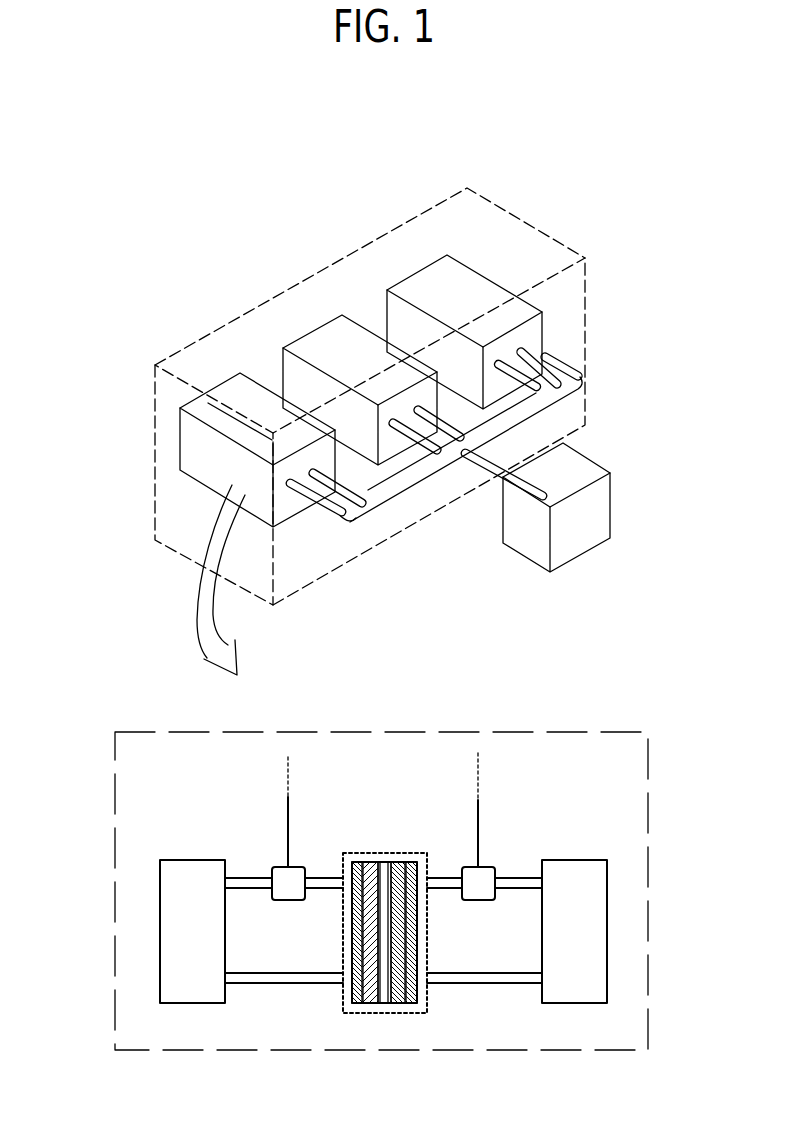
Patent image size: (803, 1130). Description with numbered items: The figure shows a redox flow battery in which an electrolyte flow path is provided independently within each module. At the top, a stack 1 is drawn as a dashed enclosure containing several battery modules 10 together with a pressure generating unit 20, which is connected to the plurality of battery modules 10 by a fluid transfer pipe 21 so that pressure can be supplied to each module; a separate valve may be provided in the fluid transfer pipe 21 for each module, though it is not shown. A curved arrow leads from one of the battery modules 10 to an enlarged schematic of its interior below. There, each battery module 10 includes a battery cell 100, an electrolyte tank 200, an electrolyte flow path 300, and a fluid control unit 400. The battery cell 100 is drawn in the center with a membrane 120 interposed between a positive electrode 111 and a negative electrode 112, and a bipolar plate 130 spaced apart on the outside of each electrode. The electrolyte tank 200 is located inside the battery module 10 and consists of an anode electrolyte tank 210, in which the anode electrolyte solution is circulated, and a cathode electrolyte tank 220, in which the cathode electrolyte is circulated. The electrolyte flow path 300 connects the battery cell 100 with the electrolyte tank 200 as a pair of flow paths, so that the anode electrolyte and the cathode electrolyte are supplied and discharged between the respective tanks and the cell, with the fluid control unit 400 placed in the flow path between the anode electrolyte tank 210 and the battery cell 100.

The stack 1 is at (199, 326).
The battery module 10 is at (197, 450).
The pressure generating unit 20 is at (598, 500).
The fluid transfer pipe 21 is at (480, 828).
The battery cell 100 is at (340, 845).
The positive electrode 111 is at (372, 1008).
The negative electrode 112 is at (398, 1008).
The membrane 120 is at (383, 858).
The bipolar plate 130 is at (355, 858).
The electrolyte tank 200 is at (475, 598).
The anode electrolyte tank 210 is at (90, 906).
The cathode electrolyte tank 220 is at (668, 920).
The electrolyte flow path 300 is at (520, 872).
The fluid control unit 400 is at (277, 862).